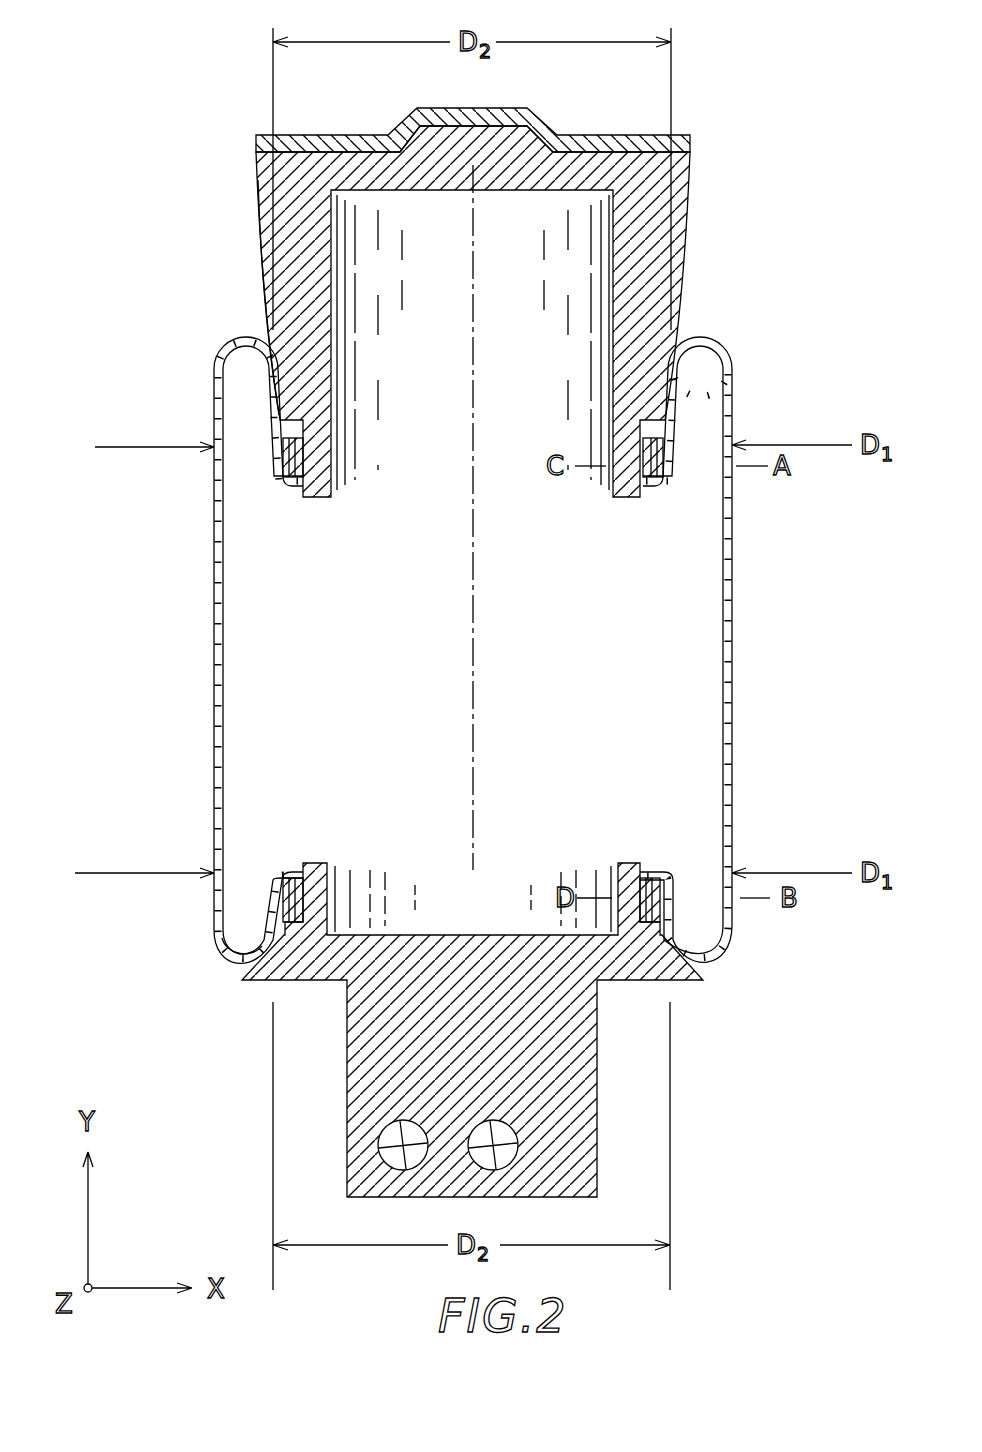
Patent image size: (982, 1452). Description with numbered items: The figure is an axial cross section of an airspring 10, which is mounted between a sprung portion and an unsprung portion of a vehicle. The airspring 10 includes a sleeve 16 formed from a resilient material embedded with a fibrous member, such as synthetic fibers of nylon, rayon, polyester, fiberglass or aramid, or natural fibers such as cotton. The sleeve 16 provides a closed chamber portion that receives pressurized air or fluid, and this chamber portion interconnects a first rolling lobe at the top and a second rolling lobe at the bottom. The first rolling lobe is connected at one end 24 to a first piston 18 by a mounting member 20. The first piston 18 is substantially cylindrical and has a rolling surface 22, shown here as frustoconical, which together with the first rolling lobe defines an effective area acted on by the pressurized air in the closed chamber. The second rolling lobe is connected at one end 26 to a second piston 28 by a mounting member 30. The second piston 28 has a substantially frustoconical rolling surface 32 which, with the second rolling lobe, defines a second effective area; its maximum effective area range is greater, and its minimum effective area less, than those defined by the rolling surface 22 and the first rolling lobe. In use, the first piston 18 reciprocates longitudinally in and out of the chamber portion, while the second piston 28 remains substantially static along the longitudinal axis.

The airspring 10 is at (499, 652).
The sleeve 16 is at (732, 398).
The first piston 18 is at (303, 198).
The mounting member 20 is at (283, 458).
The rolling surface 22 is at (267, 288).
The end 24 is at (643, 447).
The end 26 is at (653, 880).
The second piston 28 is at (660, 975).
The mounting member 30 is at (283, 890).
The rolling surface 32 is at (245, 948).